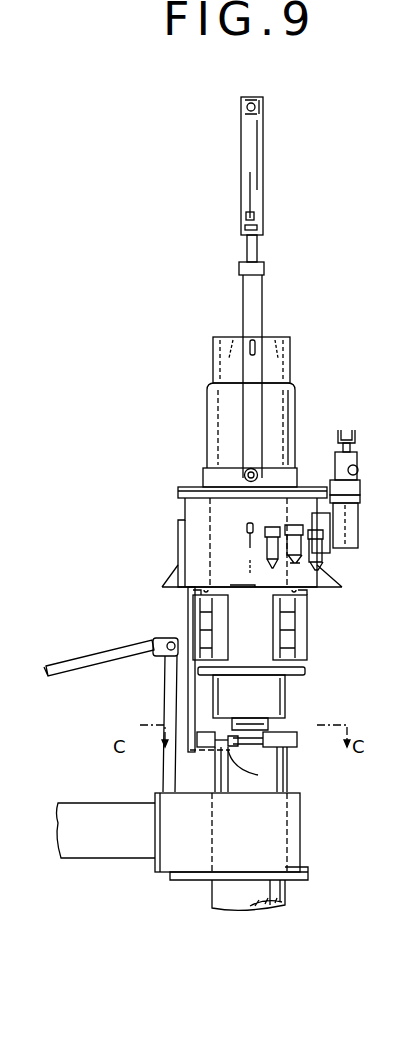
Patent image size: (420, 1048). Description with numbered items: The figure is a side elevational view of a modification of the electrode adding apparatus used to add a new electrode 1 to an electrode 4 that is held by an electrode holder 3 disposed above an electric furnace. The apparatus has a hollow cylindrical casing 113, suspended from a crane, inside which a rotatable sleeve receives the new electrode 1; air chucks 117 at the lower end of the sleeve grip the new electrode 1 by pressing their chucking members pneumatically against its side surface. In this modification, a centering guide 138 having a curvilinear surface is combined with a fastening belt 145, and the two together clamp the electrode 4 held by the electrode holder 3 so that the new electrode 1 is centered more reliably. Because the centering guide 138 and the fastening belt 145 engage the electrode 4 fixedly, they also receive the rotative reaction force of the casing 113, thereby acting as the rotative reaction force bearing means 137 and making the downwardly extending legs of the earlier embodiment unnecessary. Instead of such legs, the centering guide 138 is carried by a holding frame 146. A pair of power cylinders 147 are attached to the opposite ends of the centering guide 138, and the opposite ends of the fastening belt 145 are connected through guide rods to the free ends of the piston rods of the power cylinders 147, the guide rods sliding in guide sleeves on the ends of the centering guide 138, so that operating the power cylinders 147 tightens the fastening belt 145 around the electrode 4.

The new electrode 1 is at (213, 355).
The electrode holder 3 is at (295, 824).
The electrode 4 is at (260, 890).
The hollow cylindrical casing 113 is at (336, 586).
The air chuck 117 is at (296, 640).
The rotative reaction force bearing means 137 is at (293, 717).
The centering guide 138 is at (258, 775).
The fastening belt 145 is at (292, 735).
The holding frame 146 is at (187, 622).
The power cylinder 147 is at (192, 757).